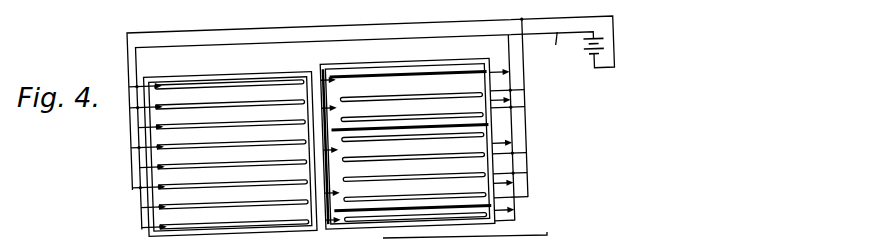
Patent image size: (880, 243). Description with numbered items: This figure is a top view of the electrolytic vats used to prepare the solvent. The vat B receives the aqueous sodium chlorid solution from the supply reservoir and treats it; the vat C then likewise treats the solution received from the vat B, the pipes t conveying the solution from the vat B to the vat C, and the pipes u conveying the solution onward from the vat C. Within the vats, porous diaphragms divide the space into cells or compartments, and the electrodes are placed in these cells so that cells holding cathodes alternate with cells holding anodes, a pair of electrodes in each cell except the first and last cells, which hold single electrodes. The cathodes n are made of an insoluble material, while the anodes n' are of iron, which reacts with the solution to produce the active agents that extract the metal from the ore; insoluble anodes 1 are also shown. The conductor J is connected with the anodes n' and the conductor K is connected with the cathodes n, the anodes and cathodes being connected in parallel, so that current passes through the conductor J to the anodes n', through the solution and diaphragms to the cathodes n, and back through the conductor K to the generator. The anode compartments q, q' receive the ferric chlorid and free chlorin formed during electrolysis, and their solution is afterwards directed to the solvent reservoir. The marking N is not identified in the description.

The electric conductor J is at (373, 122).
The pipes u is at (525, 107).
The electric conductor K is at (556, 52).
The left plate frame N is at (230, 141).
The electrolytic vat B is at (402, 138).
The electrolytic vat C is at (408, 136).
The pipes t is at (330, 108).
The anode compartment q is at (231, 103).
The anode n' is at (323, 109).
The cathode n is at (321, 106).
The anode compartment q' is at (319, 111).
The insoluble anode 1 is at (383, 113).